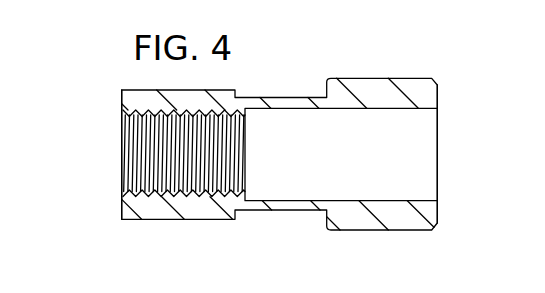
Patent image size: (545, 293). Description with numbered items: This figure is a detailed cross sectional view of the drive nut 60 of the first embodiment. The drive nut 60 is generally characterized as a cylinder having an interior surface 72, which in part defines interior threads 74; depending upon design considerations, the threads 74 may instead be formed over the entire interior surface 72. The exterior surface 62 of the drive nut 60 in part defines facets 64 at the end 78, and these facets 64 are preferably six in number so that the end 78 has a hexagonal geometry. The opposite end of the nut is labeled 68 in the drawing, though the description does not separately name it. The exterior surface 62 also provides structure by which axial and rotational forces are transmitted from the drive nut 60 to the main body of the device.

The drive nut 60 is at (277, 97).
The exterior surface 62 is at (133, 219).
The facets 64 is at (371, 78).
The first end 68 is at (122, 101).
The interior surface 72 is at (338, 201).
The interior threads 74 is at (142, 148).
The end 78 is at (438, 93).